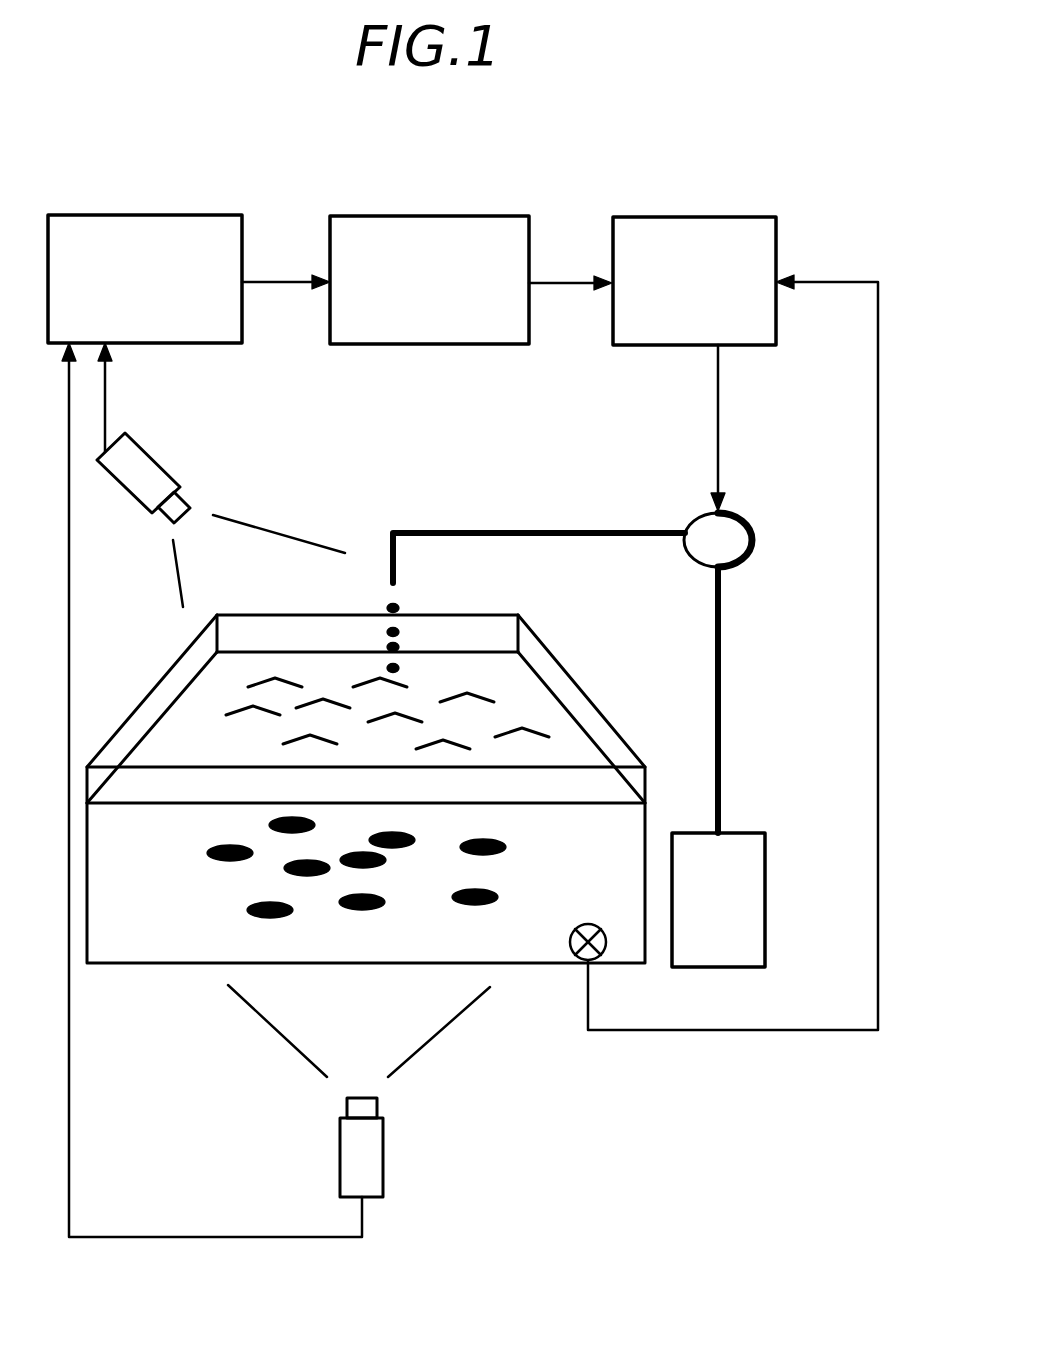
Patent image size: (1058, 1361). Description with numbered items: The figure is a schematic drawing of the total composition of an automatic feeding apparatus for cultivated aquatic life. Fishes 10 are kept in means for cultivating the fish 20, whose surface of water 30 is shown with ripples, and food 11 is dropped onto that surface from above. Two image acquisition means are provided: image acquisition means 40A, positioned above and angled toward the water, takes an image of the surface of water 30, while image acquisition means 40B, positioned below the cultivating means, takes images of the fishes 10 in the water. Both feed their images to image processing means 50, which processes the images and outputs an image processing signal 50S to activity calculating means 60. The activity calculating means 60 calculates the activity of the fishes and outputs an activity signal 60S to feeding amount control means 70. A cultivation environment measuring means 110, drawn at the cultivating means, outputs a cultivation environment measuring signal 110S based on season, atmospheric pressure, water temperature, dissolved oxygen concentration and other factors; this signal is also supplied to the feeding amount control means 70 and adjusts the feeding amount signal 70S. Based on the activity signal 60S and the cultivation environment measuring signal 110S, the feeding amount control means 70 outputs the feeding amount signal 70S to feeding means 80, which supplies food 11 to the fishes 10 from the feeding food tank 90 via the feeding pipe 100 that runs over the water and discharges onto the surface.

The image processing means 50 is at (110, 215).
The activity calculating means 60 is at (393, 216).
The feeding amount control means 70 is at (675, 217).
The image processing signal 50S is at (286, 268).
The activity signal 60S is at (570, 269).
The feeding amount signal 70S is at (745, 428).
The cultivation environment measuring signal 110S is at (733, 639).
The feeding means 80 is at (745, 520).
The feeding pipe 100 is at (487, 531).
The food 11 is at (398, 645).
The means for cultivating the fish 20 is at (613, 725).
The surface of water 30 is at (520, 690).
The fishes 10 is at (498, 892).
The feeding food tank 90 is at (765, 890).
The cultivation environment measuring means 110 is at (576, 958).
The image acquisition means 40A is at (165, 468).
The image acquisition means 40B is at (383, 1168).